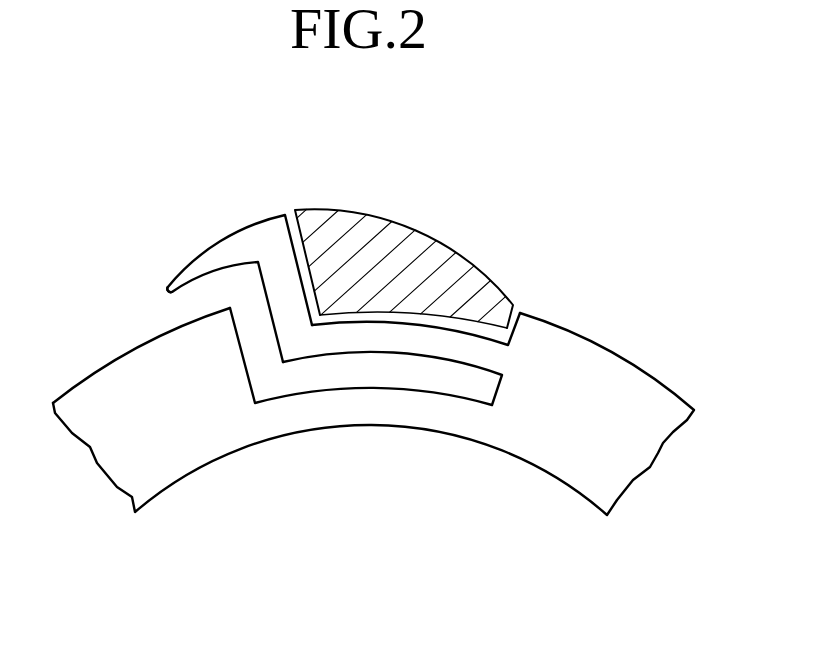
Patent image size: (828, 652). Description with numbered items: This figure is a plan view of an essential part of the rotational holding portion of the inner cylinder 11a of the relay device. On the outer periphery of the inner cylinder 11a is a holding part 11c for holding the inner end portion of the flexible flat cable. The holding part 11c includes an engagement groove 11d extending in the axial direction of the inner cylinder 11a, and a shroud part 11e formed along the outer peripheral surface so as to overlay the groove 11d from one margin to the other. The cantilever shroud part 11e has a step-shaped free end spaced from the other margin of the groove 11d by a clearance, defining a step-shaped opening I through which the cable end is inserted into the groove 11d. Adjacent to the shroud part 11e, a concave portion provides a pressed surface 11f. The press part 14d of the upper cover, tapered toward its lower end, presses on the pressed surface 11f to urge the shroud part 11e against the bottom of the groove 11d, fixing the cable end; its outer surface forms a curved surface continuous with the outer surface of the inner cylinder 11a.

The inner cylinder 11a is at (657, 380).
The holding part 11c is at (209, 227).
The engagement groove 11d is at (427, 388).
The shroud part 11e is at (393, 340).
The pressed surface 11f is at (342, 318).
The press part 14d is at (378, 217).
The step-shaped opening I is at (200, 297).